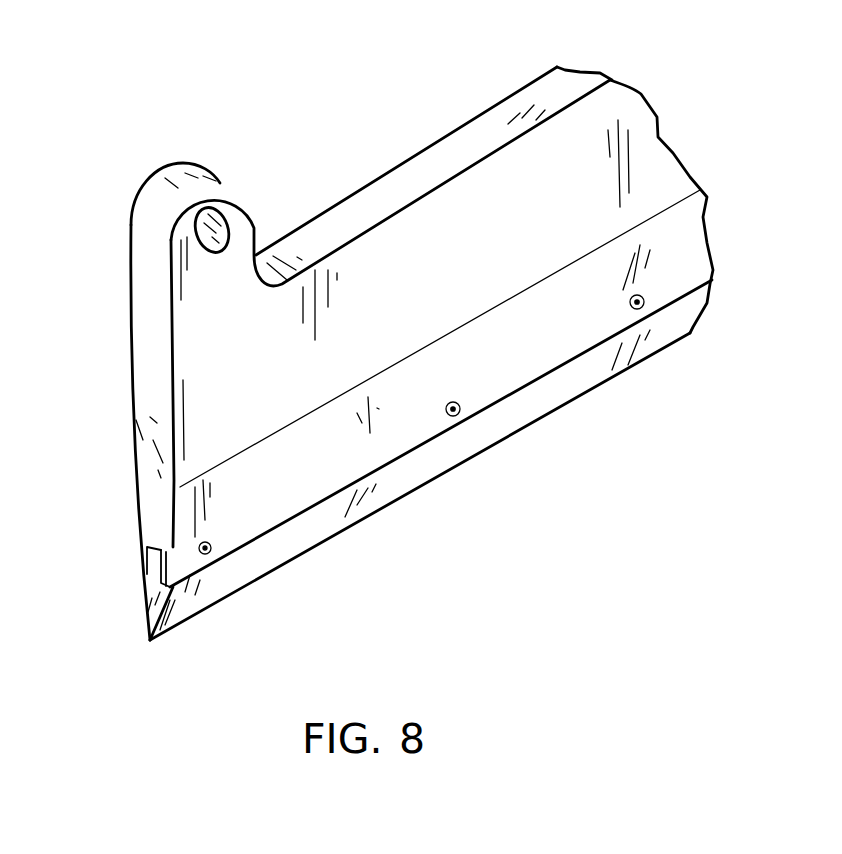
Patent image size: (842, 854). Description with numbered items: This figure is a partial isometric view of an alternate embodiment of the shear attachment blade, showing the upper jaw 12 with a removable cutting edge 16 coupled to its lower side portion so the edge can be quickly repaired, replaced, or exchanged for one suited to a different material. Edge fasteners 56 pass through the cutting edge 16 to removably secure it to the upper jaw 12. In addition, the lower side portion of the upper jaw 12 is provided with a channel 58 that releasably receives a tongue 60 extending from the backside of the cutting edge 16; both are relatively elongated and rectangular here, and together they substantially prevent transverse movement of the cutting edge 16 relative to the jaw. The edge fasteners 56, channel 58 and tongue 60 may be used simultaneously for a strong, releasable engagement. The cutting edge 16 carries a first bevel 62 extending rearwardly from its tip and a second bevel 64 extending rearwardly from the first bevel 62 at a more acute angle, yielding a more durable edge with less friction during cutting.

The upper jaw 12 is at (590, 150).
The second bevel 64 is at (687, 263).
The first bevel 62 is at (670, 320).
The cutting edge 16 is at (298, 542).
The edge fastener 56 is at (460, 412).
The channel 58 is at (163, 562).
The tongue 60 is at (137, 563).